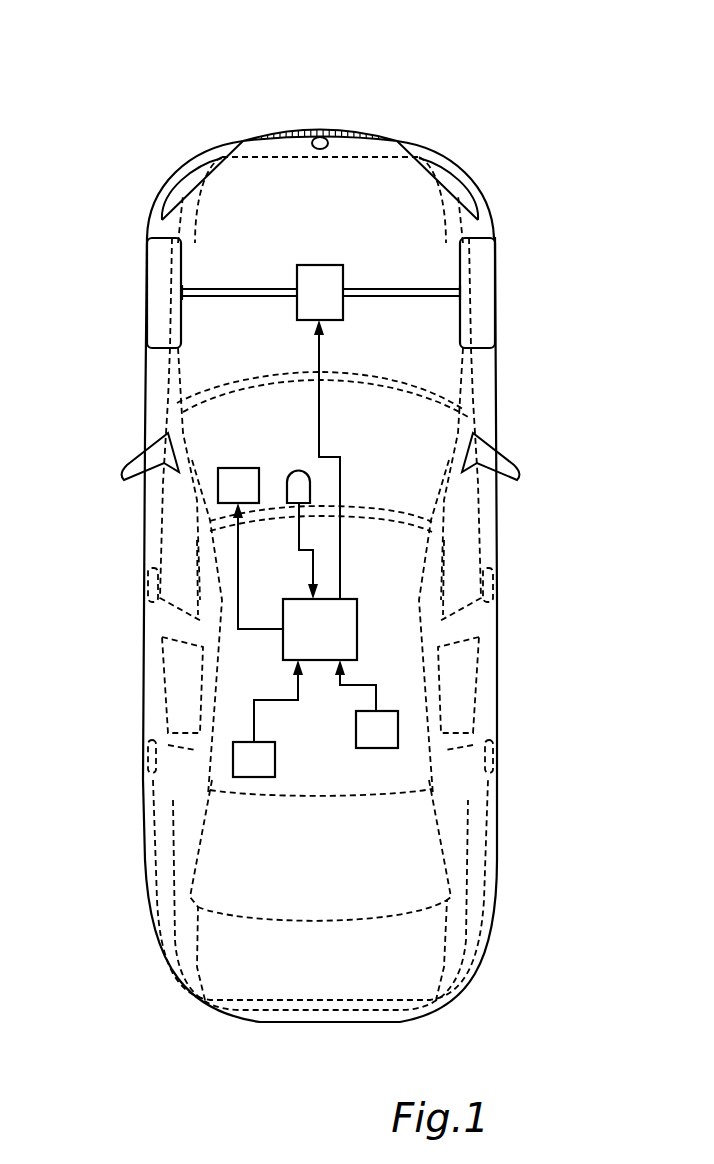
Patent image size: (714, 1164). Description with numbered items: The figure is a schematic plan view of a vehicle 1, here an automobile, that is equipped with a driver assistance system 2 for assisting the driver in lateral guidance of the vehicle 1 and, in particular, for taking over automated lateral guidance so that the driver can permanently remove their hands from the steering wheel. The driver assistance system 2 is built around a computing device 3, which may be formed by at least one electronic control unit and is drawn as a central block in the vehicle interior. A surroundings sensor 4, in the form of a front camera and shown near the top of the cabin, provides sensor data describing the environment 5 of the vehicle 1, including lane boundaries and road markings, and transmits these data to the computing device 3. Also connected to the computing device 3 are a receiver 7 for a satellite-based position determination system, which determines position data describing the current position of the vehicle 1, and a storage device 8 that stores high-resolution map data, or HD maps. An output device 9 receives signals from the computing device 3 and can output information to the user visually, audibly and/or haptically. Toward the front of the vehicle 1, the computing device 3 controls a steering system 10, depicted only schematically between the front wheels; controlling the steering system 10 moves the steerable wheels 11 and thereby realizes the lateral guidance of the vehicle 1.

The vehicle 1 is at (292, 128).
The driver assistance system 2 is at (120, 249).
The computing device 3 is at (343, 629).
The surroundings sensor 4 is at (292, 482).
The environment 5 is at (348, 39).
The receiver 7 is at (248, 758).
The storage device 8 is at (382, 728).
The output device 9 is at (218, 485).
The steering system 10 is at (323, 272).
The steerable wheels 11 is at (153, 292).